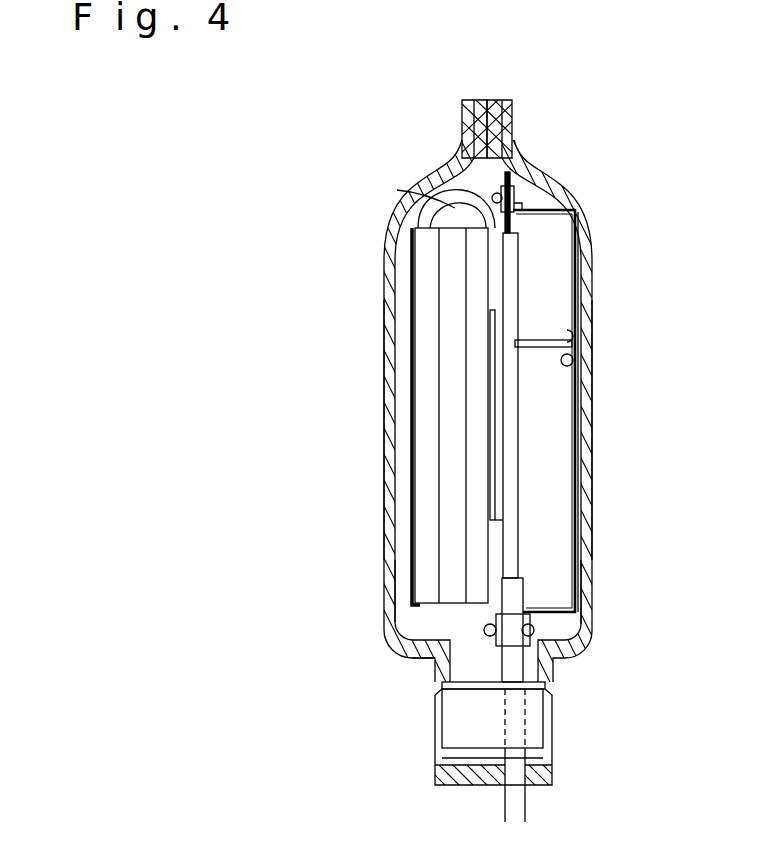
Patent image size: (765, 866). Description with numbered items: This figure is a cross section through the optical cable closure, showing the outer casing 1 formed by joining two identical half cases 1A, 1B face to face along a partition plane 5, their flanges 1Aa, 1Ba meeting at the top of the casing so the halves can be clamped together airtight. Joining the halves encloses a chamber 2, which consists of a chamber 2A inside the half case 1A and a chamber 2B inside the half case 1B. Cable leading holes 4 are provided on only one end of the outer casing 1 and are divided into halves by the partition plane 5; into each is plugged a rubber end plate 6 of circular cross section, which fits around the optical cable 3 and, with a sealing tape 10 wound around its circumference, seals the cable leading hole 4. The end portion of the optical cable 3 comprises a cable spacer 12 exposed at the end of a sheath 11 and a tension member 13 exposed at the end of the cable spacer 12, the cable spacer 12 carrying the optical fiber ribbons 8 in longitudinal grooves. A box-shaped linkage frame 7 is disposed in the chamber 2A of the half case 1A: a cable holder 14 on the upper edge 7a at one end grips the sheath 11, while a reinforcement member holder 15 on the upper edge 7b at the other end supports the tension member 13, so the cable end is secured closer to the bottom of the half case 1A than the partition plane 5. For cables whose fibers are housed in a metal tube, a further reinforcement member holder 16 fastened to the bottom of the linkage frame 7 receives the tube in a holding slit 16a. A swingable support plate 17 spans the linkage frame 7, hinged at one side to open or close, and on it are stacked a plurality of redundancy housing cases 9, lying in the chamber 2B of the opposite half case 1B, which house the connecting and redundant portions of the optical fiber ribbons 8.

The outer casing 1 is at (383, 240).
The half case 1A is at (595, 470).
The half case 1B is at (385, 425).
The flange 1Aa is at (505, 100).
The flange 1Ba is at (472, 108).
The chamber 2 is at (448, 612).
The chamber 2A is at (547, 638).
The chamber 2B is at (413, 627).
The optical cable 3 is at (504, 803).
The cable leading hole 4 is at (533, 728).
The partition plane 5 is at (498, 130).
The end plate 6 is at (473, 721).
The linkage frame 7 is at (577, 260).
The upper edge 7a is at (530, 640).
The upper edge 7b is at (522, 200).
The optical fiber ribbon 8 is at (485, 213).
The redundancy housing case 9 is at (472, 328).
The sealing tape 10 is at (545, 708).
The sheath 11 is at (518, 592).
The cable spacer 12 is at (513, 418).
The tension member 13 is at (513, 176).
The cable holder 14 is at (400, 660).
The reinforcement member holder 15 is at (478, 182).
The reinforcement member holder 16 is at (562, 332).
The holding slit 16a is at (533, 350).
The swingable support plate 17 is at (490, 443).